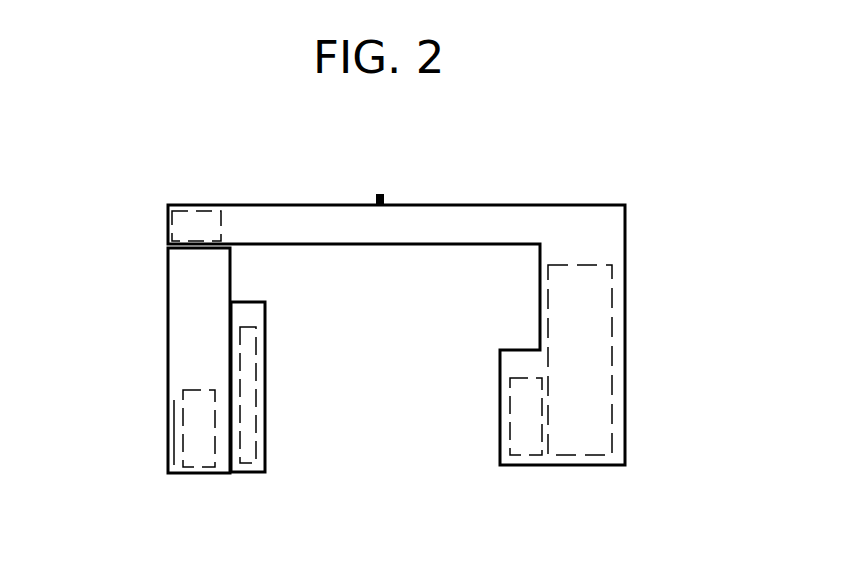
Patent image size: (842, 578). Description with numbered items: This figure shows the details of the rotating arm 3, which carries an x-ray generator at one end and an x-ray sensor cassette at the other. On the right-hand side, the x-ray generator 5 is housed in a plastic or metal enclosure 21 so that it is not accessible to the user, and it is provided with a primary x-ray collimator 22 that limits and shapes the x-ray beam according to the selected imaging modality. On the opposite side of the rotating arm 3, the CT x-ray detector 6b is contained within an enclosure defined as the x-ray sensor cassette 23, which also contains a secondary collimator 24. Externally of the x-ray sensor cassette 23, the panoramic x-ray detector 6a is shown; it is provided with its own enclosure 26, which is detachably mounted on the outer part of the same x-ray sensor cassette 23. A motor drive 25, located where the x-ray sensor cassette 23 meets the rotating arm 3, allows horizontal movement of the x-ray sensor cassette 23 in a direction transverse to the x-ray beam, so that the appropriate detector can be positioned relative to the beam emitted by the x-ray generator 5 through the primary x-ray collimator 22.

The rotating arm 3 is at (515, 218).
The enclosure 21 is at (461, 290).
The motor drive 25 is at (198, 223).
The x-ray sensor cassette 23 is at (165, 272).
The CT x-ray detector 6b is at (200, 408).
The secondary collimator 24 is at (173, 433).
The enclosure 26 is at (265, 318).
The panoramic x-ray detector 6a is at (248, 452).
The x-ray generator 5 is at (585, 413).
The primary x-ray collimator 22 is at (525, 415).